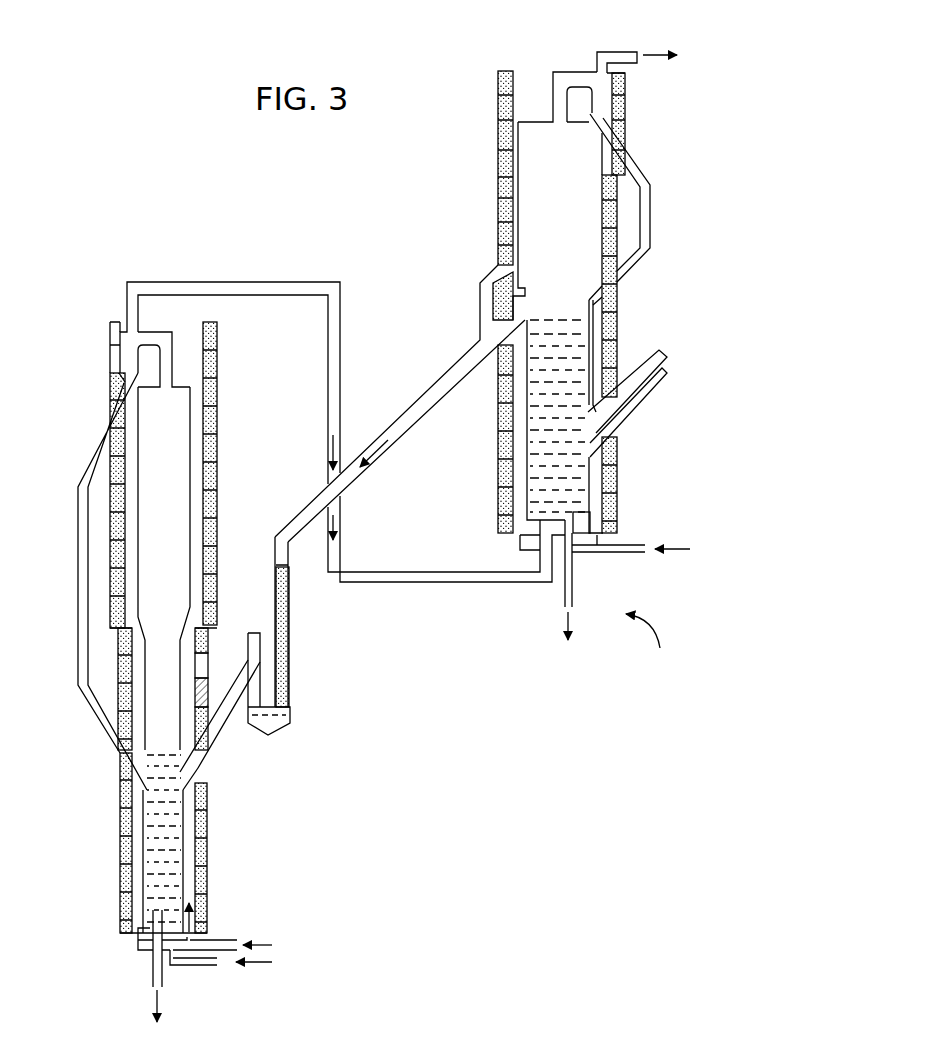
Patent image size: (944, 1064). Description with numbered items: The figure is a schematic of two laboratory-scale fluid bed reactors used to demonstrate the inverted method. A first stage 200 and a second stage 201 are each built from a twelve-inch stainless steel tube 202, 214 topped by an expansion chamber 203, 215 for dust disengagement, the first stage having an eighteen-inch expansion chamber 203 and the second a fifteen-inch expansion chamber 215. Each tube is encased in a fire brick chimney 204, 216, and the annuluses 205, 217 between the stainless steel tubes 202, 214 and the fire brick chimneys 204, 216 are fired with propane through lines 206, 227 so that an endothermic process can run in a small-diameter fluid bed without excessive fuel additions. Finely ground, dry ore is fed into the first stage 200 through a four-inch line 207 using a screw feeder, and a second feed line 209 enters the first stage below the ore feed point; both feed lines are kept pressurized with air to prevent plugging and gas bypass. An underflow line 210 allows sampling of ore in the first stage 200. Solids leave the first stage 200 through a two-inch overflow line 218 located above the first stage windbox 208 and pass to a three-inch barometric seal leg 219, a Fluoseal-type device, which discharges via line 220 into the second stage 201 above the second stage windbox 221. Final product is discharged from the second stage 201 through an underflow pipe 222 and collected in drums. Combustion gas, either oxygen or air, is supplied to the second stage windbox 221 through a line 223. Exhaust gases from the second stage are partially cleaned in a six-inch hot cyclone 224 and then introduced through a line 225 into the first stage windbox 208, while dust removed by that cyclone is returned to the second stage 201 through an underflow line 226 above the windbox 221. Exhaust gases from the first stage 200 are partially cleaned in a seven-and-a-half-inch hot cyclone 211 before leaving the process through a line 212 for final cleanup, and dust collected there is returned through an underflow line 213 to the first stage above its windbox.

The first stage 200 is at (647, 646).
The second stage 201 is at (95, 318).
The stainless steel tube 202 is at (527, 467).
The expansion chamber 203 is at (577, 190).
The fire brick chimney 204 is at (498, 420).
The annulus 205 is at (598, 483).
The line 206 is at (636, 557).
The line 207 is at (663, 351).
The first stage windbox 208 is at (520, 523).
The feed pipe 209 is at (667, 370).
The underflow line 210 is at (566, 598).
The hot cyclone 211 is at (597, 97).
The line 212 is at (617, 50).
The underflow line 213 is at (652, 231).
The stainless steel tube 214 is at (143, 800).
The expansion chamber 215 is at (180, 480).
The fire brick chimney 216 is at (125, 822).
The annulus 217 is at (140, 852).
The overflow line 218 is at (452, 367).
The barometric seal leg 219 is at (292, 712).
The line 220 is at (226, 728).
The windbox 221 is at (165, 920).
The underflow pipe 222 is at (152, 960).
The line 223 is at (196, 966).
The hot cyclone 224 is at (128, 356).
The line 225 is at (285, 282).
The underflow line 226 is at (78, 533).
The line 227 is at (215, 940).